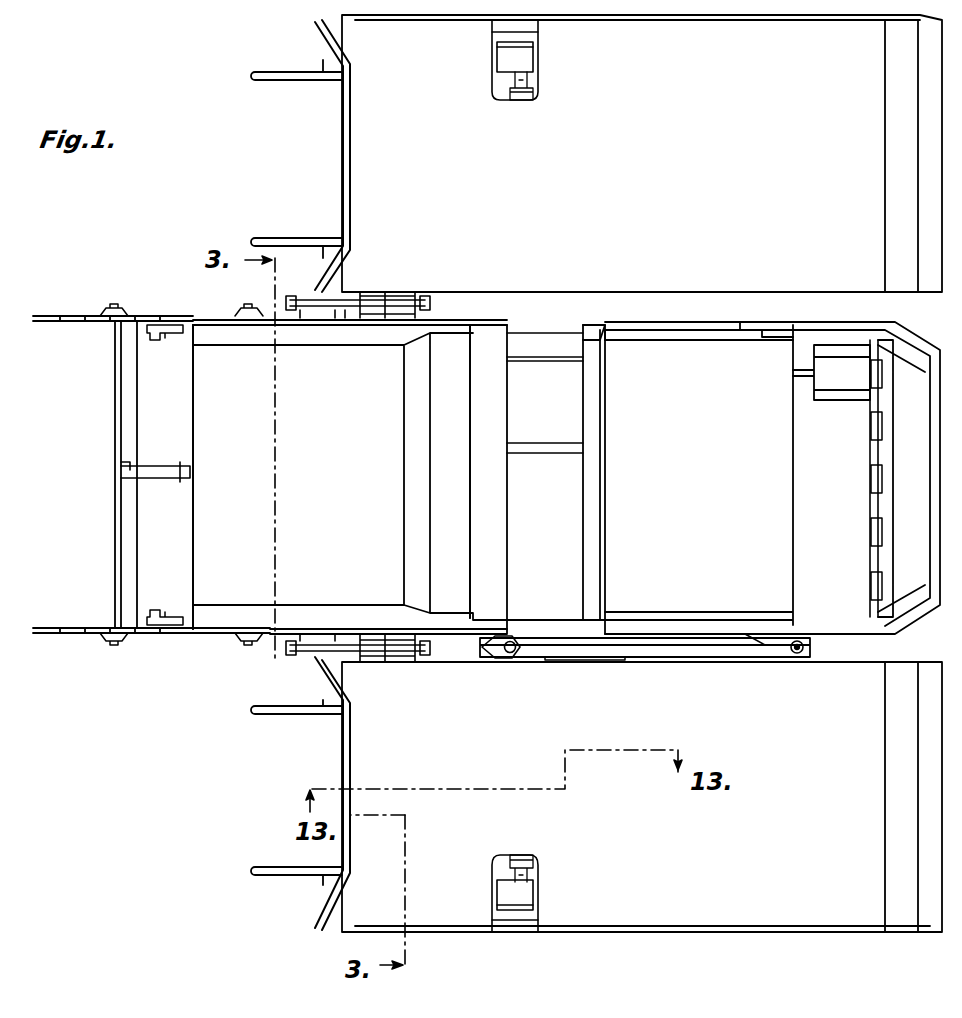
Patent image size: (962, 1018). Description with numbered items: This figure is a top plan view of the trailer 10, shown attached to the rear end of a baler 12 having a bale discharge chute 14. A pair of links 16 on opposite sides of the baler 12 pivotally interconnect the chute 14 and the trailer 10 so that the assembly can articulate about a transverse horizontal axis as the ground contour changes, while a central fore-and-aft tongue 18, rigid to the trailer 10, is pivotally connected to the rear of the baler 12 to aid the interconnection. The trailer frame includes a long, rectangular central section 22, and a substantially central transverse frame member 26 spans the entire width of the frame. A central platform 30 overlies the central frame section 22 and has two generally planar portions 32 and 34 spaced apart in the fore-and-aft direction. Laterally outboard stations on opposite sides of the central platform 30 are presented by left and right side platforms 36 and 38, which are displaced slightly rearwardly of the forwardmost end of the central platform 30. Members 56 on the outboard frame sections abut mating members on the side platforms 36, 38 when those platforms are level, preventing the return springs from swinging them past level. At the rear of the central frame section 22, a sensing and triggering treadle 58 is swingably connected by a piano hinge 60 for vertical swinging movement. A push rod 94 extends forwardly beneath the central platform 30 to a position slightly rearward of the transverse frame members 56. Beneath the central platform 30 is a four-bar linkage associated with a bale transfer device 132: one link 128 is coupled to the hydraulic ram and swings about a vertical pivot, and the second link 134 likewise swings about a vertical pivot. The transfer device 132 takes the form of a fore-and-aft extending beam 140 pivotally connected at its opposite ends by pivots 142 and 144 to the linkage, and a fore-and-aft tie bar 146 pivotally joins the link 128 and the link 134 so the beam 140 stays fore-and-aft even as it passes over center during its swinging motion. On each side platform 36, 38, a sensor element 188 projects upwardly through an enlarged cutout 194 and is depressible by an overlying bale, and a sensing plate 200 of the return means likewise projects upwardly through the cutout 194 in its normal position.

The trailer 10 is at (182, 718).
The baler 12 is at (46, 312).
The bale discharge chute 14 is at (66, 640).
The links 16 is at (149, 316).
The tongue 18 is at (146, 470).
The central section 22 is at (893, 323).
The transverse frame member 26 is at (602, 545).
The central platform 30 is at (188, 546).
The planar portion 32 is at (205, 392).
The planar portion 34 is at (785, 438).
The left side platform 36 is at (338, 746).
The right side platform 38 is at (338, 122).
The member 56 is at (390, 292).
The sensing and triggering treadle 58 is at (895, 552).
The piano hinge 60 is at (874, 478).
The push rod 94 is at (536, 358).
The link 128 is at (500, 634).
The bale transfer device 132 is at (738, 660).
The second link 134 is at (782, 636).
The beam 140 is at (655, 658).
The pivot 142 is at (511, 656).
The pivot 144 is at (797, 656).
The tie bar 146 is at (522, 454).
The sensor element 188 is at (505, 48).
The cutout 194 is at (540, 32).
The sensing plate 200 is at (522, 100).